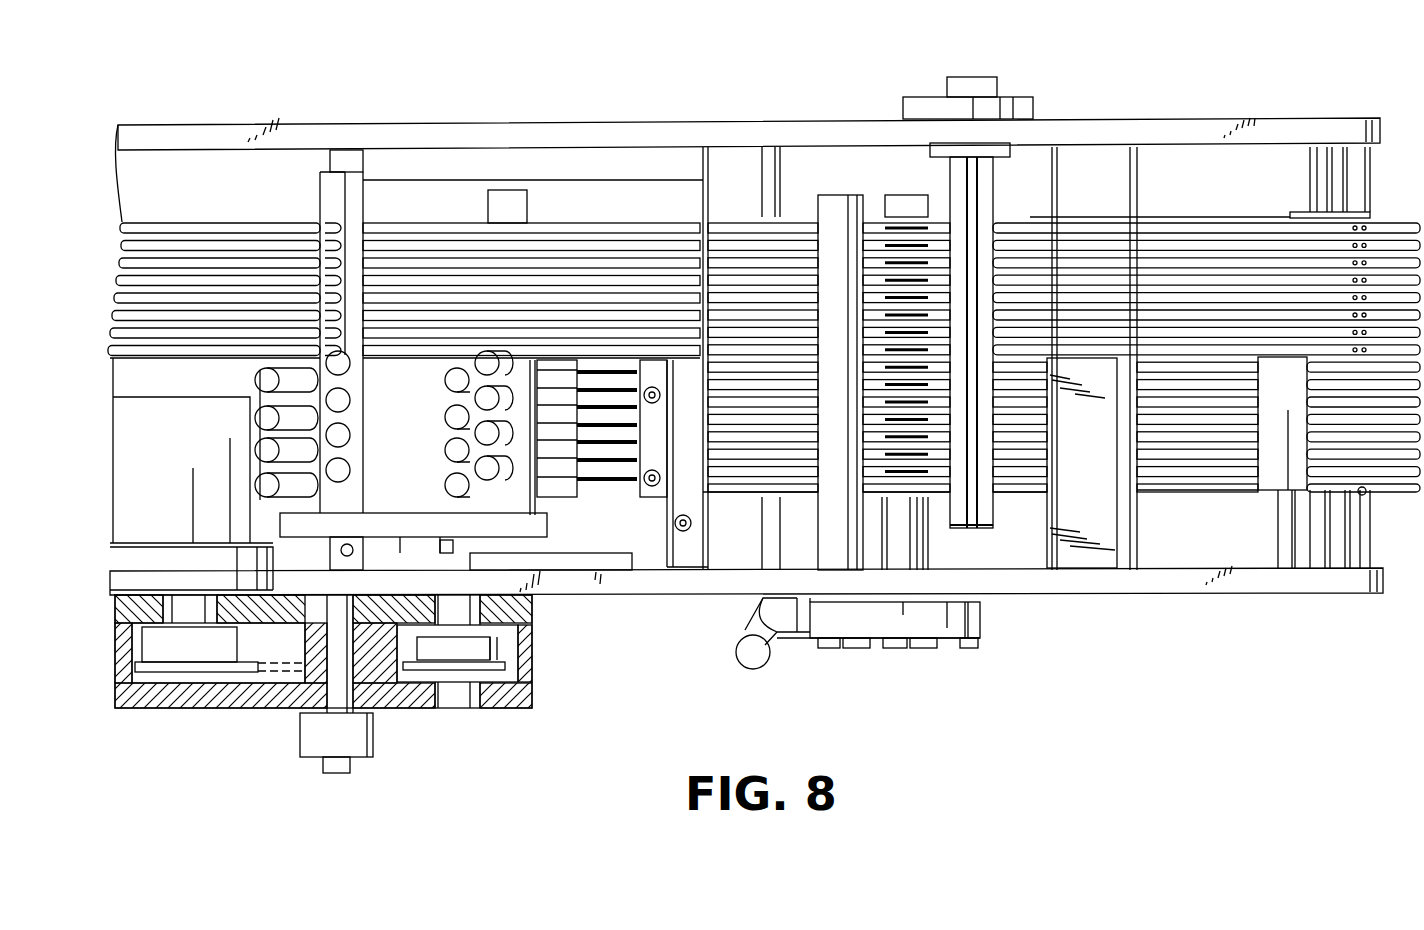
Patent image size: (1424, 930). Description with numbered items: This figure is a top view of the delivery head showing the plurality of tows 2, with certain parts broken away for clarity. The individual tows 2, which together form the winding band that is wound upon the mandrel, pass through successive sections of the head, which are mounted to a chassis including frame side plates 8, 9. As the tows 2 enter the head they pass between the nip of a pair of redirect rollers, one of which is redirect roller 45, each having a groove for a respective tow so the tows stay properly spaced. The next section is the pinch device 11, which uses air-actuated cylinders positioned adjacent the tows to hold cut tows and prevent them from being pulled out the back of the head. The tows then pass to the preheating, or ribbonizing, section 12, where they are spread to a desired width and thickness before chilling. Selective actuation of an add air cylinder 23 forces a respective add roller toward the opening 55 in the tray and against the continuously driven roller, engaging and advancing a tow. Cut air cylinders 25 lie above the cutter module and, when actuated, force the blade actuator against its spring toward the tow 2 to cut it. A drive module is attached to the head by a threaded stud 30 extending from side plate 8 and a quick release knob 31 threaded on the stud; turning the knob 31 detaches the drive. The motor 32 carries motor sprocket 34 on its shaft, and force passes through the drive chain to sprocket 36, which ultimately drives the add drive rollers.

The tow 2 is at (602, 228).
The frame side plate 8 is at (1321, 578).
The frame side plate 9 is at (1283, 127).
The pinch device 11 is at (1100, 443).
The preheating or ribbonizing section 12 is at (907, 660).
The add air cylinder 23 is at (440, 428).
The cut air cylinder 25 is at (232, 428).
The threaded stud 30 is at (347, 775).
The quick release knob 31 is at (356, 740).
The motor 32 is at (185, 488).
The motor sprocket 34 is at (197, 648).
The sprocket 36 is at (470, 660).
The redirect roller 45 is at (1298, 395).
The opening 55 is at (516, 207).